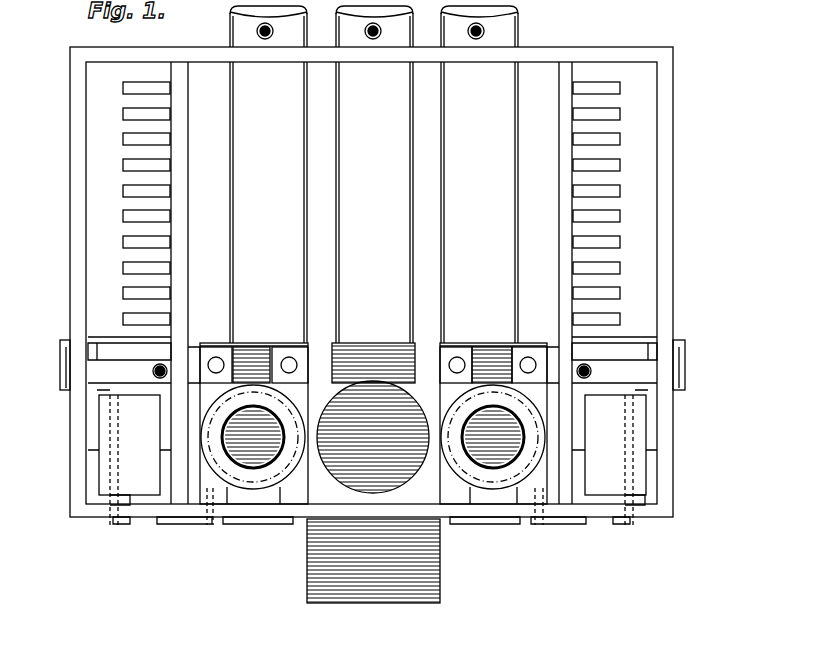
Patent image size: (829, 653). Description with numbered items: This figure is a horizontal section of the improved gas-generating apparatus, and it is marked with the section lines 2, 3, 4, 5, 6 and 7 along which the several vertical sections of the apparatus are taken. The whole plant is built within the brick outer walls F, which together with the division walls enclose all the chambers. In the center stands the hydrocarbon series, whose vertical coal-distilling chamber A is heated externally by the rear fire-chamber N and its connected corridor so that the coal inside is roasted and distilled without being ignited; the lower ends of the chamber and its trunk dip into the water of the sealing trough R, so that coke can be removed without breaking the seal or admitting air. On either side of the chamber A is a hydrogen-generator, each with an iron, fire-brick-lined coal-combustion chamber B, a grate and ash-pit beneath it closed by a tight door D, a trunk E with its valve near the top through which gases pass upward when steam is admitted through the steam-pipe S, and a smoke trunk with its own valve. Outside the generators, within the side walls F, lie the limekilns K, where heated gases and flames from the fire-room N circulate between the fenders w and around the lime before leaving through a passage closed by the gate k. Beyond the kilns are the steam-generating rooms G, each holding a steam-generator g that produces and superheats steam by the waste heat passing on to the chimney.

The outer walls F is at (372, 282).
The limekiln K is at (372, 209).
The fenders w is at (369, 254).
The gate k is at (372, 343).
The trunk E is at (372, 370).
The steam-pipe S is at (381, 442).
The coal-combustion chamber B is at (373, 255).
The coal-distilling chamber A is at (373, 249).
The fire-chamber N is at (315, 373).
The steam-generating room G is at (372, 453).
The steam-generator g is at (372, 459).
The door D is at (371, 514).
The water-sealing trough R is at (373, 561).
The section line 2 2 is at (373, 0).
The section line 3 3 is at (705, 437).
The section line 4 4 is at (705, 367).
The section line 5 5 is at (692, 205).
The section line 6 6 is at (493, 487).
The section line 7 7 is at (628, 535).